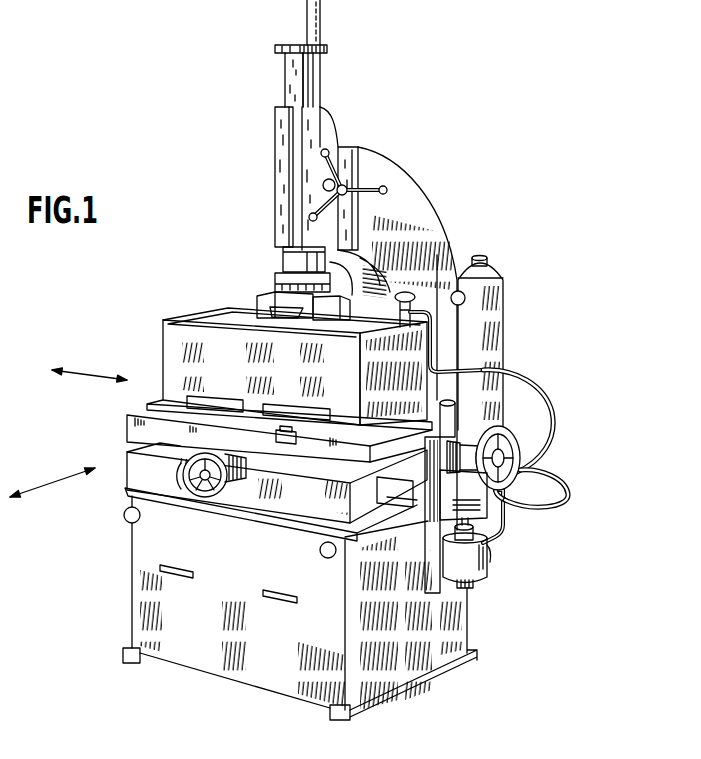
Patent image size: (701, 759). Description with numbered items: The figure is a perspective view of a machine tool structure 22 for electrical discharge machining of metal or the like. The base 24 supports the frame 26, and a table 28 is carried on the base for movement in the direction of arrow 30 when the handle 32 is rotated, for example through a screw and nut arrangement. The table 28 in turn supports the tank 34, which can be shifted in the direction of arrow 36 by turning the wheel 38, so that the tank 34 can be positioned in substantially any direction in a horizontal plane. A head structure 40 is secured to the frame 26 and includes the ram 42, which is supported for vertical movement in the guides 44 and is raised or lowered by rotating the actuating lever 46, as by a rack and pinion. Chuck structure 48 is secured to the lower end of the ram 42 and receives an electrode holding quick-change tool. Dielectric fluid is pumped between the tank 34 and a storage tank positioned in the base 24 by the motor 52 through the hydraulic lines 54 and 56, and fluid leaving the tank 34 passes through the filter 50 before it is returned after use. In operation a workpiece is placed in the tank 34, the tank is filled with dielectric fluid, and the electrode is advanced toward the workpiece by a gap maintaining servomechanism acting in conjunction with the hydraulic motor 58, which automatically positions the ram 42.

The machine tool structure 22 is at (173, 287).
The base 24 is at (135, 542).
The frame 26 is at (440, 217).
The table 28 is at (128, 432).
The arrow 30 is at (60, 480).
The handle 32 is at (207, 498).
The tank 34 is at (163, 350).
The arrow 36 is at (85, 373).
The wheel 38 is at (513, 442).
The head structure 40 is at (317, 90).
The ram 42 is at (287, 77).
The guides 44 is at (278, 162).
The actuating lever 46 is at (372, 196).
The chuck structure 48 is at (250, 297).
The filter 50 is at (500, 318).
The motor 52 is at (489, 563).
The hydraulic line 54 is at (568, 508).
The hydraulic line 56 is at (543, 402).
The hydraulic motor 58 is at (320, 15).